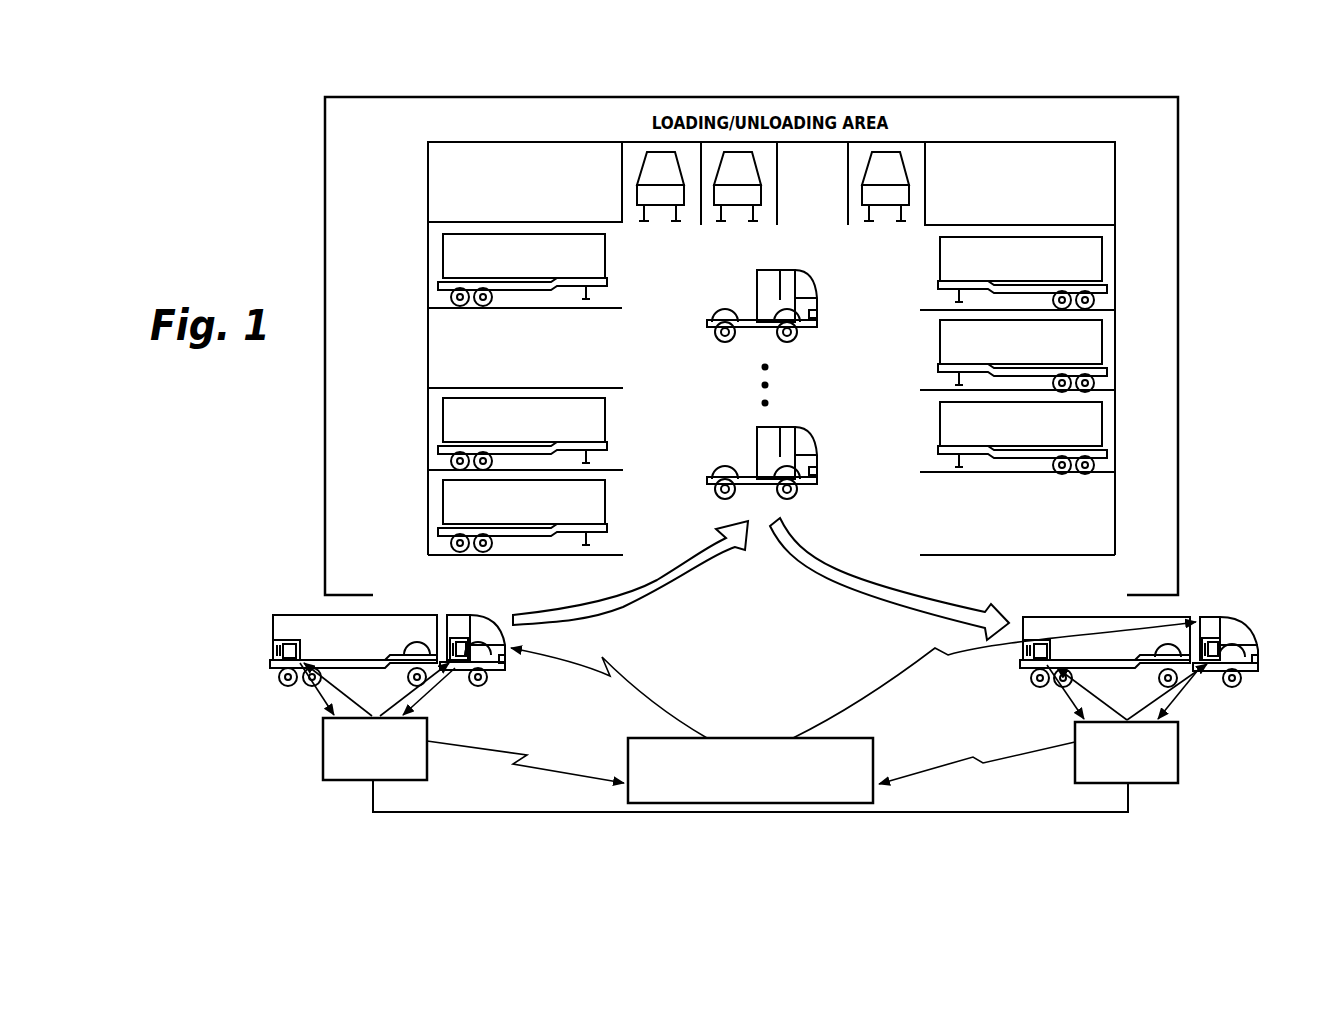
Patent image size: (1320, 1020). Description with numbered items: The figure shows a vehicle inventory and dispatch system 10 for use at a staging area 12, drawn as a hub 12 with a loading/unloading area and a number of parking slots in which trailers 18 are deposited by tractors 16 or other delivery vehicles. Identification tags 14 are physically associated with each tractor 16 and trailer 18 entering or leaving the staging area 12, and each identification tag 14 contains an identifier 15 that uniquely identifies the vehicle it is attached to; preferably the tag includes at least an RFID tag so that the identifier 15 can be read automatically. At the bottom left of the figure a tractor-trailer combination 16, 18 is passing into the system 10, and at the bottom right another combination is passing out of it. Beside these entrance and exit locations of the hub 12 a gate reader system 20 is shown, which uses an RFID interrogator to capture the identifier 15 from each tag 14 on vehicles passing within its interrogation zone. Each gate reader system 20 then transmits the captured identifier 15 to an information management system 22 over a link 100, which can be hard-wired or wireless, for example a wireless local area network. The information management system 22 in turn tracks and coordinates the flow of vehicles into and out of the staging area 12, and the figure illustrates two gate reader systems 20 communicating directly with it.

The vehicle inventory and dispatch system 10 is at (757, 646).
The staging area 12 is at (945, 97).
The identification tag 14 is at (288, 634).
The identifier 15 is at (273, 646).
The tractor 16 is at (815, 300).
The trailer 18 is at (606, 270).
The gate reader system 20 is at (323, 752).
The information management system 22 is at (880, 738).
The link 100 is at (540, 766).